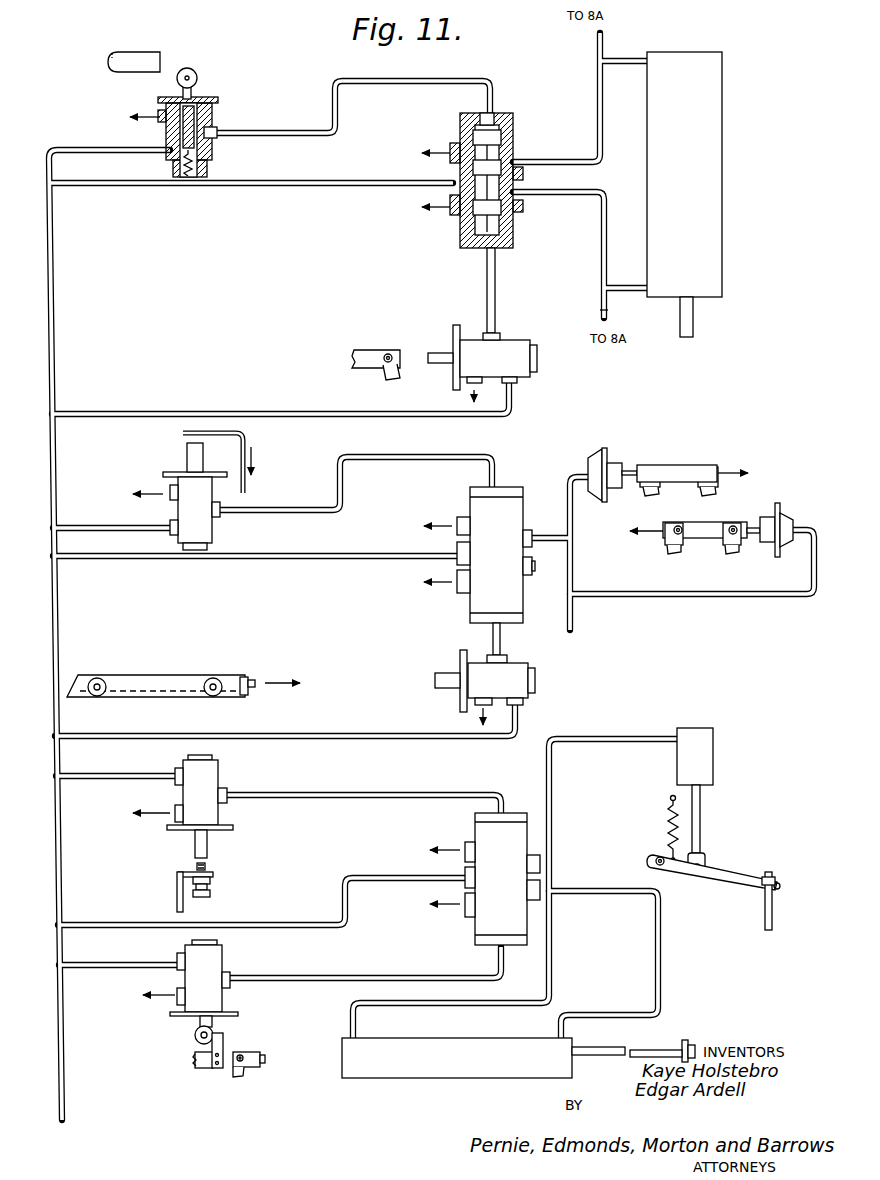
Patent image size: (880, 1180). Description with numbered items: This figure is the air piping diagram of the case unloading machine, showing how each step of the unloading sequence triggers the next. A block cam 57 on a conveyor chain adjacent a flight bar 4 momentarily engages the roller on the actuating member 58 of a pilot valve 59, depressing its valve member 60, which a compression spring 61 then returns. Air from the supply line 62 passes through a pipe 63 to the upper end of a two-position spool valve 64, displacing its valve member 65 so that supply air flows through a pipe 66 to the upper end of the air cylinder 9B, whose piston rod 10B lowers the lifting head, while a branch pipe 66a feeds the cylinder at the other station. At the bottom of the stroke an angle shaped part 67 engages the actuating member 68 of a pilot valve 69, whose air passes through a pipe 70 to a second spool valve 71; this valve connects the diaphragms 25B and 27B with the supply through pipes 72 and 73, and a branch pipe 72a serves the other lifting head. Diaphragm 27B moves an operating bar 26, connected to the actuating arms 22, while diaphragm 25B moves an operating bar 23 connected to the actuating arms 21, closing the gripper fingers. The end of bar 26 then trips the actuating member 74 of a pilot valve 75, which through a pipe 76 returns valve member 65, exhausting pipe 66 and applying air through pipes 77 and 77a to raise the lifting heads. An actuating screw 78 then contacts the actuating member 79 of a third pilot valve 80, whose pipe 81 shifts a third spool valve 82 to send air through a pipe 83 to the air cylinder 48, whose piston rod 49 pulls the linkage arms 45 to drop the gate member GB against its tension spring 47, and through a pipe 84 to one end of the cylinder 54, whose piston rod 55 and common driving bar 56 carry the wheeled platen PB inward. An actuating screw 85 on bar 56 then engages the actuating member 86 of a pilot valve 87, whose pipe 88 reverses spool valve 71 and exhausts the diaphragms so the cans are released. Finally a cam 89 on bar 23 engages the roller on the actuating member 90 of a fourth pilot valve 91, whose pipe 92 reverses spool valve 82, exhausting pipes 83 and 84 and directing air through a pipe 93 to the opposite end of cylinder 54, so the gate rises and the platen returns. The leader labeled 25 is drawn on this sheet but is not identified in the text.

The flight bar 4 is at (113, 53).
The block cam 57 is at (150, 46).
The actuating member 58 is at (190, 92).
The pilot valve 59 is at (166, 168).
The valve member 60 is at (205, 148).
The compression spring 61 is at (207, 168).
The supply line 62 is at (85, 148).
The pipe 63 is at (368, 80).
The spool valve 64 is at (462, 226).
The valve member 65 is at (497, 148).
The pipe 66 is at (604, 119).
The branch pipe 66a is at (606, 46).
The air cylinder 9B is at (723, 145).
The piston rod 10B is at (694, 322).
The pipe 76 is at (496, 286).
The pipe 77 is at (602, 224).
The pipe 77a is at (602, 318).
The pilot valve 75 is at (517, 348).
The actuating member 74 is at (440, 352).
The lever 25 is at (366, 350).
The actuating arm 22 is at (392, 373).
The angle shaped part 67 is at (183, 433).
The actuating member 68 is at (187, 460).
The pilot valve 69 is at (213, 530).
The pipe 70 is at (336, 468).
The spool valve 71 is at (470, 505).
The pipe 73 is at (574, 515).
The pipe 72 is at (618, 593).
The branch pipe 72a is at (576, 620).
The diaphragm 27B is at (614, 463).
The operating bar 26 is at (681, 466).
The operating bar 23 is at (723, 522).
The diaphragm 25B is at (777, 511).
The actuating arm 21 is at (718, 552).
The platen PB is at (146, 675).
The common driving bar 56 is at (242, 676).
The actuating screw 85 is at (251, 679).
The pipe 88 is at (501, 640).
The actuating member 86 is at (447, 673).
The pilot valve 87 is at (523, 667).
The fluid pressure cylinder 48 is at (707, 745).
The pilot valve 80 is at (214, 777).
The pipe 81 is at (370, 793).
The actuating member 79 is at (208, 847).
The actuating screw 78 is at (197, 866).
The spool valve 82 is at (482, 830).
The pipe 83 is at (553, 782).
The pipe 84 is at (555, 935).
The tension spring 47 is at (668, 824).
The piston rod 49 is at (700, 823).
The parallelogram linkage arm 45 is at (727, 872).
The gate member GB is at (764, 912).
The pilot valve 91 is at (223, 960).
The pipe 92 is at (344, 975).
The actuating member 90 is at (200, 1023).
The cam 89 is at (224, 1044).
The pipe 93 is at (655, 962).
The fluid pressure cylinder 54 is at (447, 1069).
The piston rod 55 is at (628, 1050).